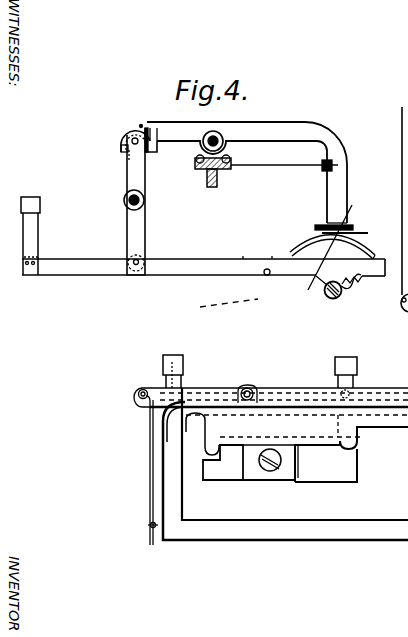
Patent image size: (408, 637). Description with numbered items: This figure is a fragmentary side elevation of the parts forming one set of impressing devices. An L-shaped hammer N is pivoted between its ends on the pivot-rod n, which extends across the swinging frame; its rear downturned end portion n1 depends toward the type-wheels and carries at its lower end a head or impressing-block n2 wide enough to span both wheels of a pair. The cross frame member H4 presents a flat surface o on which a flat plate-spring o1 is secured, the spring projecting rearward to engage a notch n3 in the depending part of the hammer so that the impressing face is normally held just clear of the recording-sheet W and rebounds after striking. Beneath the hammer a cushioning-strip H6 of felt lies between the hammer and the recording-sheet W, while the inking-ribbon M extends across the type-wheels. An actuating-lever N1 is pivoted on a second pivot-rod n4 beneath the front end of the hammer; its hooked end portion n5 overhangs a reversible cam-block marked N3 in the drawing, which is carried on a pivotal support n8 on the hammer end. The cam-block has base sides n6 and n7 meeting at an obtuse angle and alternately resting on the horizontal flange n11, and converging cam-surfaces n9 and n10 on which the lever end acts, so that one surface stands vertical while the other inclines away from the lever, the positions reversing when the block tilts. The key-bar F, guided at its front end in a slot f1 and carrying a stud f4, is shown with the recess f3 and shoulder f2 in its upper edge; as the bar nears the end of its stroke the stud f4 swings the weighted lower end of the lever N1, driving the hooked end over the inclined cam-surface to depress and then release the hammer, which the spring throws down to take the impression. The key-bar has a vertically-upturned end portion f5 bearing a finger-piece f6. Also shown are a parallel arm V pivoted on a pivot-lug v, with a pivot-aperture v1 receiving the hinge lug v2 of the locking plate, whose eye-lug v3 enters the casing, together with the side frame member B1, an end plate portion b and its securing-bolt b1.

The L-shaped hammer N is at (280, 128).
The actuating-lever N1 is at (128, 180).
The bracket arm N3 is at (153, 132).
The pivot-rod n is at (218, 139).
The rear downturned end portion n1 is at (327, 195).
The head or impressing-block n2 is at (323, 226).
The notch n3 is at (322, 168).
The second pivot-rod n4 is at (126, 201).
The L-shaped or hooked end portion n5 is at (133, 125).
The base side of cam-block n6 is at (151, 151).
The base side of cam-block n7 is at (121, 148).
The pivotal support n8 is at (125, 138).
The cam-surface n9 is at (158, 133).
The cam-surface n10 is at (141, 124).
The horizontal flange n11 is at (124, 156).
The cross frame member H4 is at (204, 169).
The cushioning-strip H6 is at (341, 237).
The flat surface o is at (228, 169).
The flat plate-spring o1 is at (267, 166).
The recording-sheet W is at (303, 229).
The inking-ribbon M is at (326, 294).
The key-bar F is at (185, 281).
The shoulder f2 is at (272, 259).
The recess f3 is at (243, 259).
The stud f4 is at (267, 278).
The vertically-upturned end portion f5 is at (38, 230).
The tip or finger-piece f6 is at (40, 203).
The slot or kerf f1 is at (163, 364).
The parallel arm V is at (220, 394).
The pivot-lug v is at (249, 388).
The pivot-aperture v1 is at (143, 398).
The hinge lug or ear v2 is at (139, 393).
The eye-lug v3 is at (150, 525).
The side frame member B1 is at (351, 454).
The end plate portion b is at (228, 468).
The securing-bolt b1 is at (270, 471).